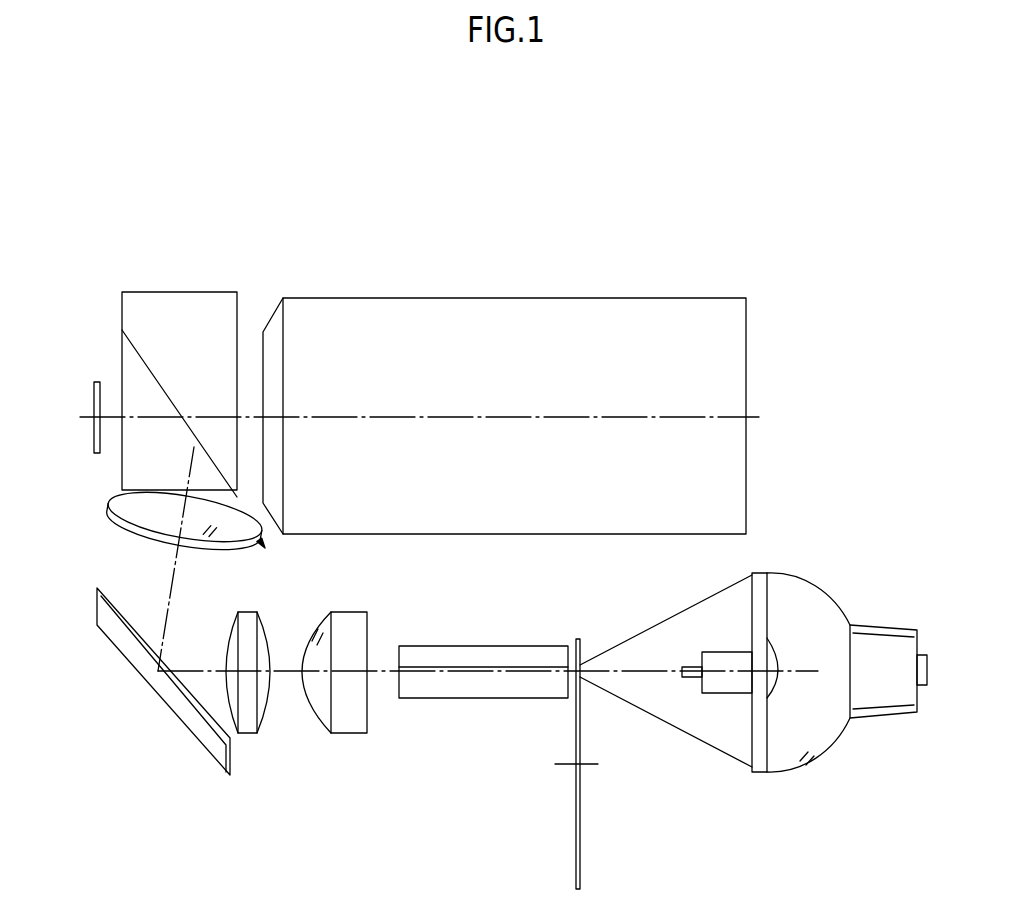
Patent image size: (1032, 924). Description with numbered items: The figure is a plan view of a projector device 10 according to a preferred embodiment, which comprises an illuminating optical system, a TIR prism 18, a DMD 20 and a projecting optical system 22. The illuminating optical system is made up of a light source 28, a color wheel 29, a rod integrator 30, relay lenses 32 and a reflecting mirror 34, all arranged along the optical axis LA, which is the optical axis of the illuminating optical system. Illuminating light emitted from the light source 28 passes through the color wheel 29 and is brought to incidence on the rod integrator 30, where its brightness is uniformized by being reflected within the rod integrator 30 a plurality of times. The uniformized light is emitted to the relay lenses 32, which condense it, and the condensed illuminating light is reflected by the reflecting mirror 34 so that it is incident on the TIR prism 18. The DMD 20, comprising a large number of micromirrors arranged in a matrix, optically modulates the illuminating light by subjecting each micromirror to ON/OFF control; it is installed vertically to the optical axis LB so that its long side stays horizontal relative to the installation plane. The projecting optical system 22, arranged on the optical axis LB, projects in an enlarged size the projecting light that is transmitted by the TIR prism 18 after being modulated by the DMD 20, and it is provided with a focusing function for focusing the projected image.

The projector device 10 is at (813, 250).
The TIR prism 18 is at (198, 308).
The DMD 20 is at (95, 388).
The projecting optical system 22 is at (645, 318).
The optical axis LB is at (485, 417).
The optical axis LA is at (385, 673).
The reflecting mirror 34 is at (198, 722).
The relay lenses 32 is at (367, 762).
The rod integrator 30 is at (498, 688).
The color wheel 29 is at (583, 870).
The light source 28 is at (813, 740).